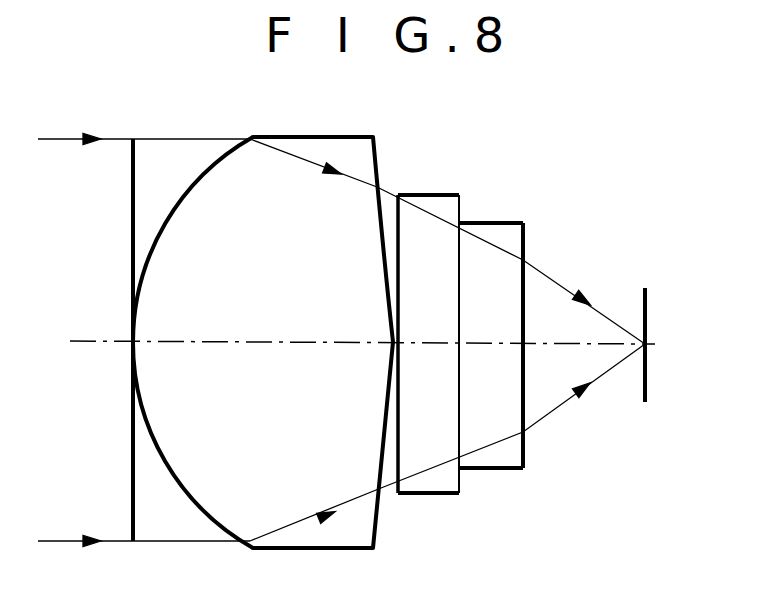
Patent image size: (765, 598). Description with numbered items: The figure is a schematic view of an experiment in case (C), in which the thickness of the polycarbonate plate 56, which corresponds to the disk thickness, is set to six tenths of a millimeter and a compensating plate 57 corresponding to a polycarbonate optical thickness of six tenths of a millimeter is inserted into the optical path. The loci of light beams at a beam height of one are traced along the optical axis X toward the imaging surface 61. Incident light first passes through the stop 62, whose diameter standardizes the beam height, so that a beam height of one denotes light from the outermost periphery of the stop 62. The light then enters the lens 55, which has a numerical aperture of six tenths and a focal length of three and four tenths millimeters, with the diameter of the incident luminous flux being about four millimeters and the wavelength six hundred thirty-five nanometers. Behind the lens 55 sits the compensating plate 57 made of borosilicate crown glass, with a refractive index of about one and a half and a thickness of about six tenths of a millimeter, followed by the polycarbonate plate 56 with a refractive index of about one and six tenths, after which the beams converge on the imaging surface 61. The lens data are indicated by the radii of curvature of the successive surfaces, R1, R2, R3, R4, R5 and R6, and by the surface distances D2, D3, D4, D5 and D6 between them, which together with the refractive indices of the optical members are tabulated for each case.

The lens 55 is at (263, 312).
The polycarbonate plate 56 is at (522, 352).
The compensating plate 57 is at (455, 349).
The imaging surface 61 is at (644, 294).
The stop 62 is at (131, 190).
The optical axis X is at (99, 343).
The first surface of lens 55 R1 is at (133, 302).
The second surface of lens 55 R2 is at (395, 320).
The first surface of lens 57 R3 is at (393, 475).
The second surface of lens 57 R4 is at (462, 476).
The first surface of lens 56 R5 is at (452, 428).
The second surface of lens 56 R6 is at (527, 452).
The thickness of lens 55 D2 is at (286, 346).
The air gap between lens 55 and lens 57 D3 is at (383, 346).
The thickness of lens 57 D4 is at (432, 347).
The distance between lens 57 and lens 56 D5 is at (460, 342).
The thickness of lens 56 D6 is at (503, 347).